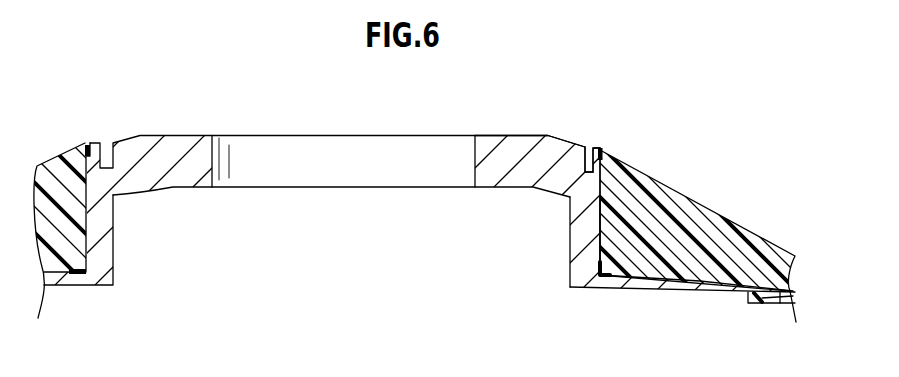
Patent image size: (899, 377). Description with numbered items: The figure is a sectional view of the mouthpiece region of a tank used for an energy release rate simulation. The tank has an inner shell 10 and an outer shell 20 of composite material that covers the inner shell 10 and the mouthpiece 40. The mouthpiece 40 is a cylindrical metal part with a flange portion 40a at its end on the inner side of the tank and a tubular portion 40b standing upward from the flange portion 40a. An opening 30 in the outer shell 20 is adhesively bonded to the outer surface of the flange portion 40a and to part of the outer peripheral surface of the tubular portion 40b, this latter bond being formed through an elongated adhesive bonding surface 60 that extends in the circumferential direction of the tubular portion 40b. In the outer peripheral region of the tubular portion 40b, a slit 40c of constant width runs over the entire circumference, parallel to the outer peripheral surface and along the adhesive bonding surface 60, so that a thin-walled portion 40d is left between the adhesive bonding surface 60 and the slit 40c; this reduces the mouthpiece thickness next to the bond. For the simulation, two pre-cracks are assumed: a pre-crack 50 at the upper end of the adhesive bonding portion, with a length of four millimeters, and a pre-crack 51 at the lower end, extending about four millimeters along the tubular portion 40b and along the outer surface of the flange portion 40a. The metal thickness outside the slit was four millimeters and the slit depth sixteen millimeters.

The inner shell 10 is at (760, 304).
The outer shell 20 is at (678, 218).
The opening 30 is at (598, 229).
The mouthpiece 40 is at (490, 128).
The flange portion 40a is at (675, 282).
The tubular portion 40b is at (532, 158).
The slit 40c is at (589, 147).
The thin-walled portion 40d is at (595, 152).
The pre-crack 50 is at (605, 155).
The pre-crack 51 is at (605, 273).
The adhesive bonding surface 60 is at (601, 192).